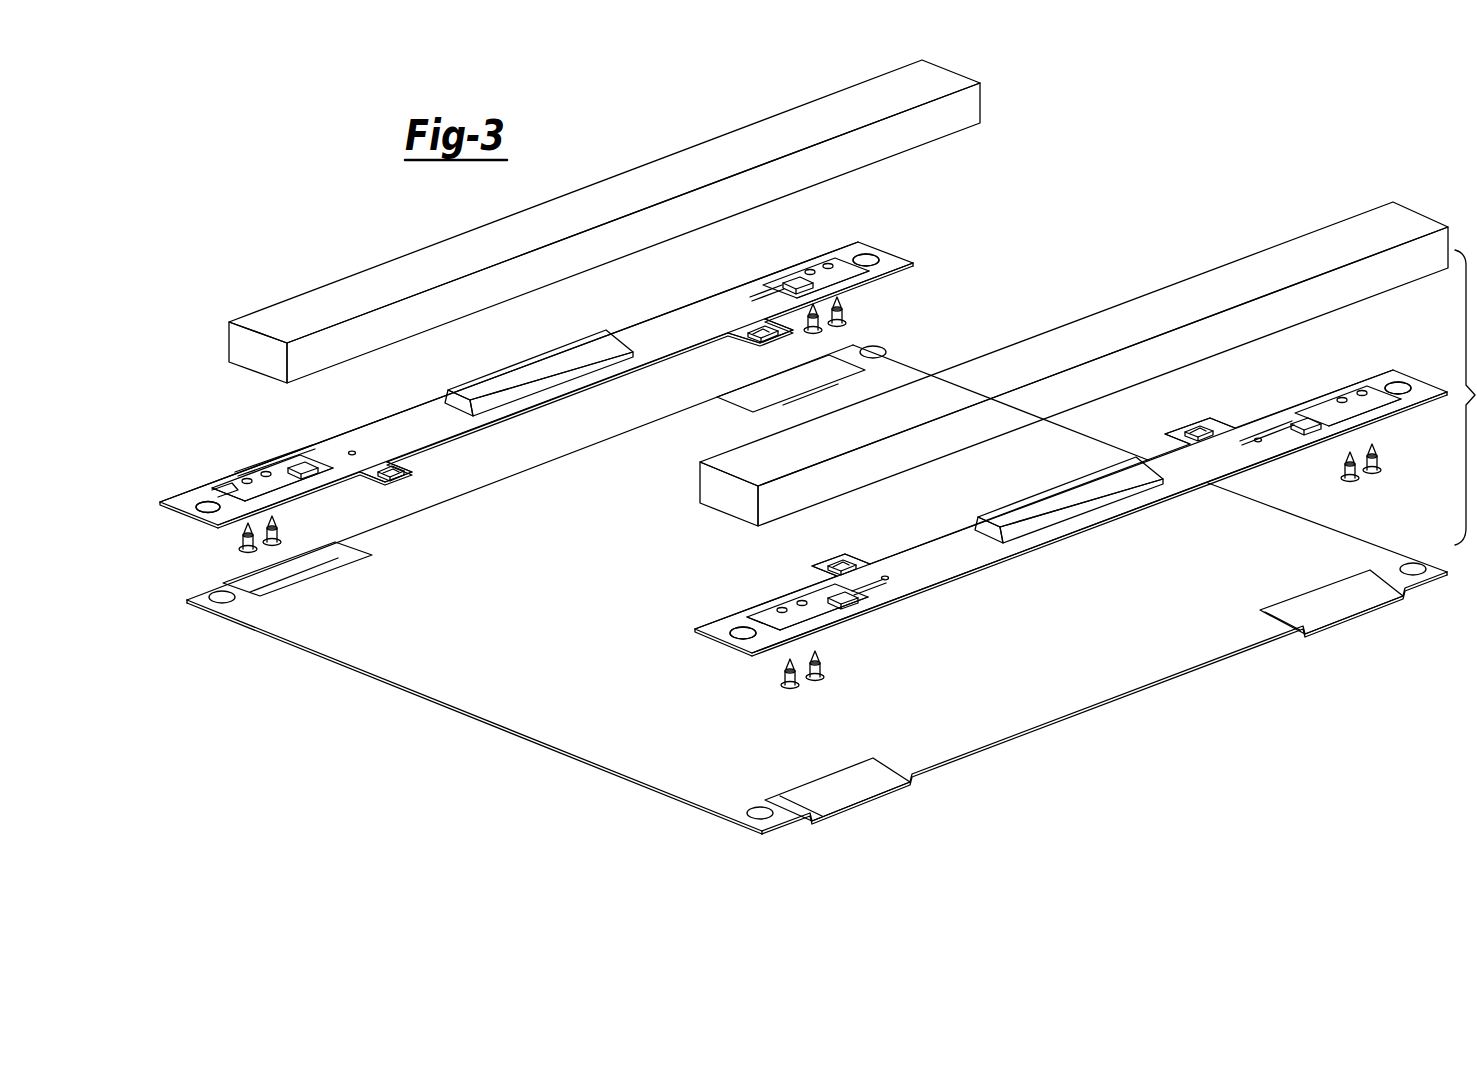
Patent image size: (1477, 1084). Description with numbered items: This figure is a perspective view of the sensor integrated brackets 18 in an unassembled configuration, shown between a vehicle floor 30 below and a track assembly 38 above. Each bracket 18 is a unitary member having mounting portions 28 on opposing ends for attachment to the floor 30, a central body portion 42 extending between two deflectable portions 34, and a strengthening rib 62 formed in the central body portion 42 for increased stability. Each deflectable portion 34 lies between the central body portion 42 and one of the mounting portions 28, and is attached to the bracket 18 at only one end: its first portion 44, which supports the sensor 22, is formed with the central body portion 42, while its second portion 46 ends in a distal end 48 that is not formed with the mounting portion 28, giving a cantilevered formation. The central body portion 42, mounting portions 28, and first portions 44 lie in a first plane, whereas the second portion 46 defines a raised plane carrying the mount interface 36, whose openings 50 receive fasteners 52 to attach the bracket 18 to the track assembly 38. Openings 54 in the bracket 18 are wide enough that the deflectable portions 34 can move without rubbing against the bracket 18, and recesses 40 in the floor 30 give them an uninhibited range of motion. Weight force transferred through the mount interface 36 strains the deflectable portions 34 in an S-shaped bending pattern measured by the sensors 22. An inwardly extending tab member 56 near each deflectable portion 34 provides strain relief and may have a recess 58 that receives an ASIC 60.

The bracket 18 is at (410, 392).
The sensor 22 is at (318, 468).
The mounting portion 28 is at (164, 506).
The vehicle floor 30 is at (418, 668).
The deflectable portion 34 is at (194, 416).
The mount interface 36 is at (246, 480).
The track assembly 38 is at (322, 300).
The recess 40 is at (348, 567).
The central body portion 42 is at (527, 407).
The first portion 44 is at (302, 464).
The second portion 46 is at (283, 487).
The distal end 48 is at (222, 488).
The openings 50 is at (266, 472).
The fasteners 52 is at (272, 546).
The openings 54 is at (219, 522).
The tab member 56 is at (392, 482).
The recess 58 is at (412, 461).
The application specific integrated circuit (ASIC) 60 is at (400, 478).
The strengthening rib 62 is at (533, 366).